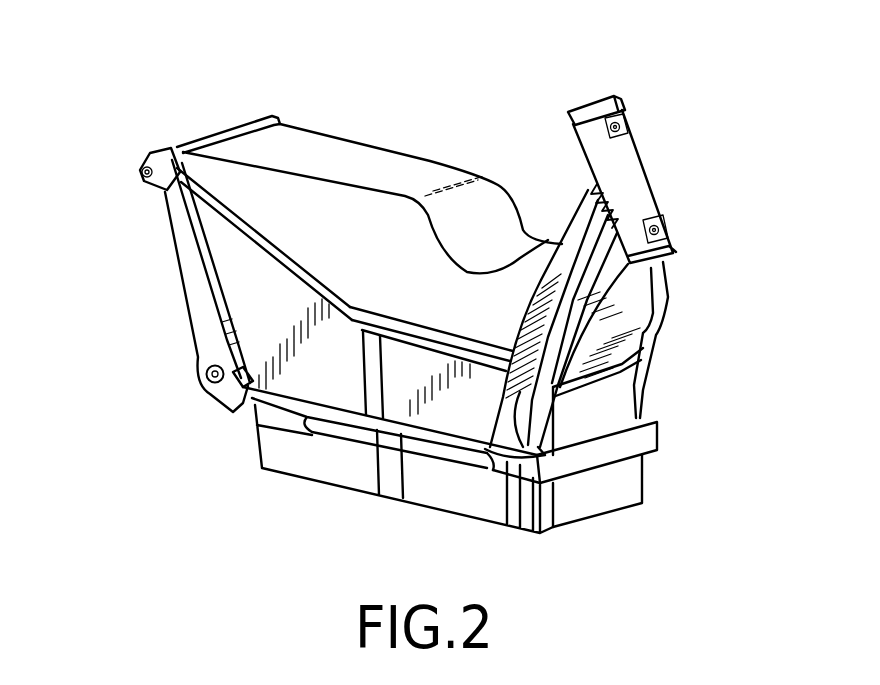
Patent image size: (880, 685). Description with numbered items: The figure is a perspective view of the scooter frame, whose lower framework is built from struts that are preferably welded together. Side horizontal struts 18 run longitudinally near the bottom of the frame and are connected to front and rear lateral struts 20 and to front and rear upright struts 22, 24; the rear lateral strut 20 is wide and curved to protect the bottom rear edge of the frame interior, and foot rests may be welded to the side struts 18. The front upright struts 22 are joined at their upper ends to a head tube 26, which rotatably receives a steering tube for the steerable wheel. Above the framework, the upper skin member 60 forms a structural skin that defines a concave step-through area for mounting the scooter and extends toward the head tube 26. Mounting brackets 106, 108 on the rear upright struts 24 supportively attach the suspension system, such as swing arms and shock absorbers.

The side horizontal struts 18 is at (268, 407).
The front and rear lateral struts 20 is at (617, 450).
The front upright struts 22 is at (664, 330).
The rear upright struts 24 is at (193, 275).
The head tube 26 is at (628, 171).
The upper skin member 60 is at (341, 160).
The mounting bracket 106 is at (200, 380).
The mounting bracket 108 is at (143, 168).